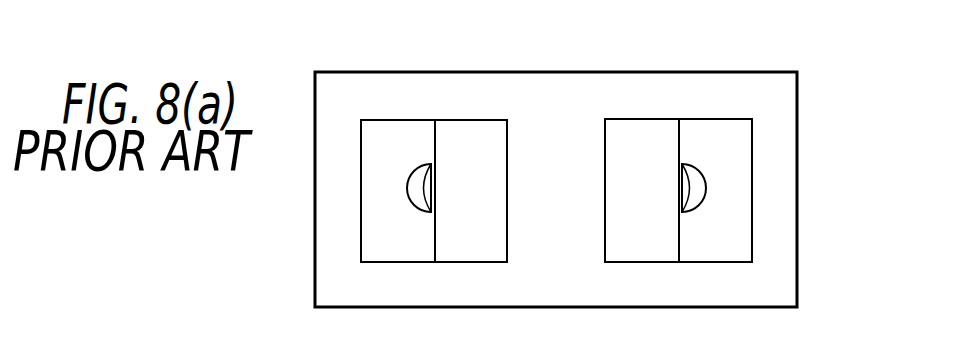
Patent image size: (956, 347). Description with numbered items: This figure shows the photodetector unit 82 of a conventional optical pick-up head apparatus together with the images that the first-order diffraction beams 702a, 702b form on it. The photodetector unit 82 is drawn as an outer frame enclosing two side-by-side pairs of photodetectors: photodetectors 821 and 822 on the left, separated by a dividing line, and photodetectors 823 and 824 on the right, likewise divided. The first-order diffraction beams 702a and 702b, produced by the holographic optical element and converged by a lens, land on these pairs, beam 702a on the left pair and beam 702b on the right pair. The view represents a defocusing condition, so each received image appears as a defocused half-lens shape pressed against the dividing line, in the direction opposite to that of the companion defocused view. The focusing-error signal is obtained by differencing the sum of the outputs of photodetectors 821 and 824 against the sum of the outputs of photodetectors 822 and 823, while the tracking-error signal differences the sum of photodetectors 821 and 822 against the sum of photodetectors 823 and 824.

The photodetector unit 82 is at (797, 238).
The photodetector 821 is at (393, 119).
The photodetector 822 is at (473, 119).
The photodetector 823 is at (633, 119).
The photodetector 824 is at (718, 119).
The 1-order diffraction beam 702a is at (408, 191).
The 1-order diffraction beam 702b is at (705, 188).